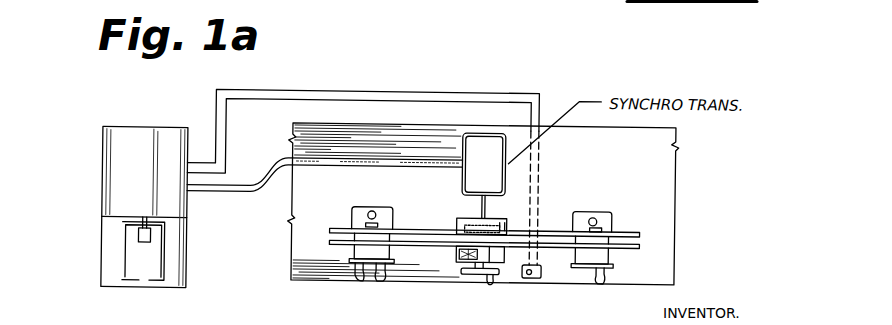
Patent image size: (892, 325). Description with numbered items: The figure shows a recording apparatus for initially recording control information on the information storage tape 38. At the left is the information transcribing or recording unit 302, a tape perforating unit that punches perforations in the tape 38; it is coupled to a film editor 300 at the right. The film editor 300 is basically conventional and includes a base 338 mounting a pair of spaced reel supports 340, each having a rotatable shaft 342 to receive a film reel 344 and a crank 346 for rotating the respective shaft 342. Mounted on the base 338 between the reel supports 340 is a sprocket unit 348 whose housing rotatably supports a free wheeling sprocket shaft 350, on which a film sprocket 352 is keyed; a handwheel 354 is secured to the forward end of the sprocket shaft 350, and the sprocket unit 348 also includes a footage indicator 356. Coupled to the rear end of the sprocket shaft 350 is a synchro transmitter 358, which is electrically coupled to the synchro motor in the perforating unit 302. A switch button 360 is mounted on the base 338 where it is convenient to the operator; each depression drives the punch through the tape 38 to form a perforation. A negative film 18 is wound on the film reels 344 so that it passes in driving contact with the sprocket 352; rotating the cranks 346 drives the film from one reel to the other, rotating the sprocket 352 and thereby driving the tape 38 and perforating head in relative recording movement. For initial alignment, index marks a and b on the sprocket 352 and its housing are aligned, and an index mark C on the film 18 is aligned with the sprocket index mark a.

The information transcribing or recording unit 302 is at (97, 175).
The information storage tape 38 is at (122, 257).
The base 338 is at (292, 285).
The film editor 300 is at (360, 284).
The reel supports 340 is at (373, 206).
The rotatable shaft 342 is at (380, 226).
The film reel 344 is at (339, 230).
The crank 346 is at (379, 268).
The sprocket unit 348 is at (497, 218).
The sprocket shaft 350 is at (480, 206).
The film sprocket 352 is at (492, 265).
The handwheel 354 is at (483, 263).
The footage indicator 356 is at (457, 251).
The synchro transmitter 358 is at (500, 166).
The switch button 360 is at (541, 276).
The negative film 18 is at (423, 234).
The index mark a is at (457, 226).
The index mark b is at (501, 222).
The index mark C is at (478, 238).